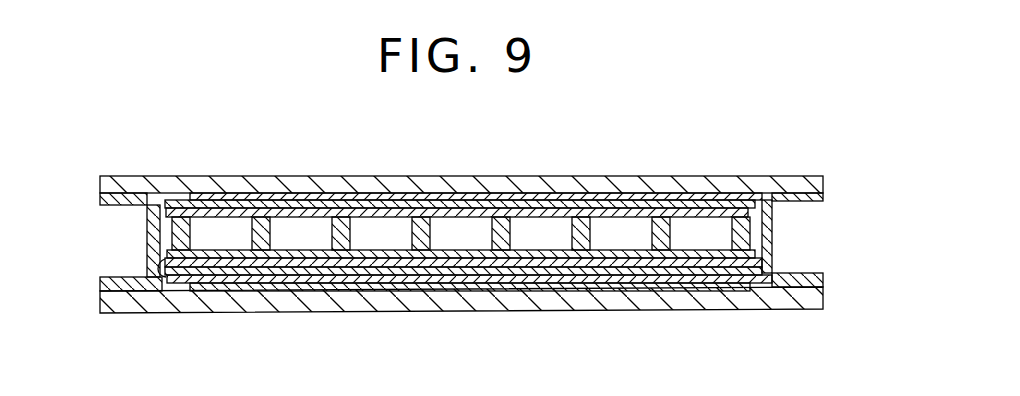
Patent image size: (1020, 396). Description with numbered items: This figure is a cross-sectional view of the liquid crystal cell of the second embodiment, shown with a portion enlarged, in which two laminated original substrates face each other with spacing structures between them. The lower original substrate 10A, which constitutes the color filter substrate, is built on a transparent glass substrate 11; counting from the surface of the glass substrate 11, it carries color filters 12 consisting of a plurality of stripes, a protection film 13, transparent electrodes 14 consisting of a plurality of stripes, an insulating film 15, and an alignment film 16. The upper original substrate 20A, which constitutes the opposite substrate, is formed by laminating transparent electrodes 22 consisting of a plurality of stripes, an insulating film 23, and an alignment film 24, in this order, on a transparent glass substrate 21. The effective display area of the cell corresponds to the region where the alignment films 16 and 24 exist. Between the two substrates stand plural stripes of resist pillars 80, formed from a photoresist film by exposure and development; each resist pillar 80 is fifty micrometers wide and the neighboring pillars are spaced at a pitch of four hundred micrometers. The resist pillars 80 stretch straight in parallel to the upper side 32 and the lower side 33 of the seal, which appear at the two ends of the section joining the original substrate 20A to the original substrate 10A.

The original substrate 20A is at (461, 162).
The transparent glass substrate 21 is at (270, 181).
The transparent electrodes 22 is at (397, 193).
The insulating film 23 is at (468, 205).
The alignment film 24 is at (341, 201).
The upper side 32 is at (768, 235).
The lower side 33 is at (152, 240).
The resist pillars 80 is at (180, 238).
The insulating film 15 is at (247, 264).
The original substrate 10A is at (461, 322).
The transparent glass substrate 11 is at (422, 303).
The color filters 12 is at (523, 287).
The protection film 13 is at (592, 272).
The transparent electrodes 14 is at (668, 264).
The alignment film 16 is at (742, 256).